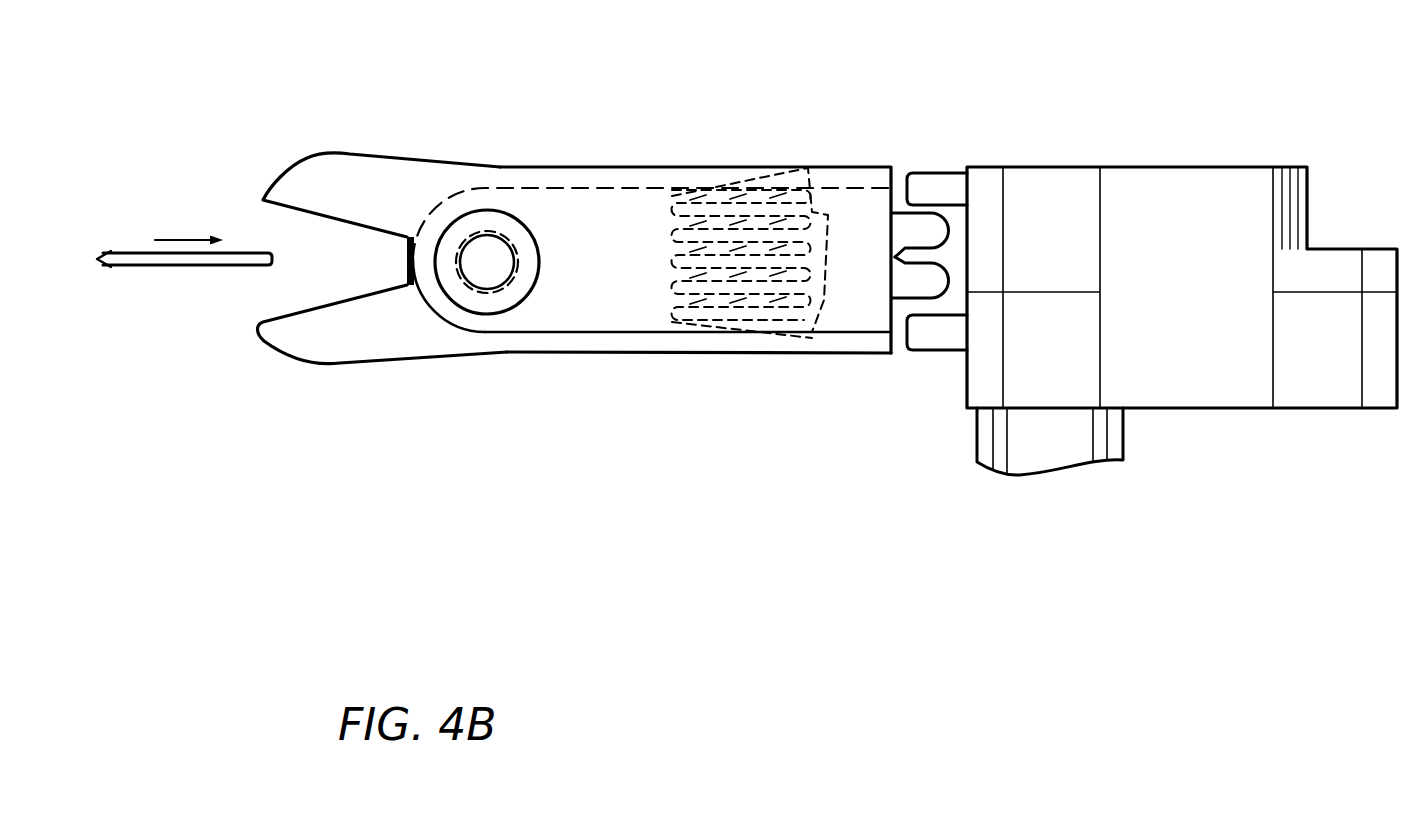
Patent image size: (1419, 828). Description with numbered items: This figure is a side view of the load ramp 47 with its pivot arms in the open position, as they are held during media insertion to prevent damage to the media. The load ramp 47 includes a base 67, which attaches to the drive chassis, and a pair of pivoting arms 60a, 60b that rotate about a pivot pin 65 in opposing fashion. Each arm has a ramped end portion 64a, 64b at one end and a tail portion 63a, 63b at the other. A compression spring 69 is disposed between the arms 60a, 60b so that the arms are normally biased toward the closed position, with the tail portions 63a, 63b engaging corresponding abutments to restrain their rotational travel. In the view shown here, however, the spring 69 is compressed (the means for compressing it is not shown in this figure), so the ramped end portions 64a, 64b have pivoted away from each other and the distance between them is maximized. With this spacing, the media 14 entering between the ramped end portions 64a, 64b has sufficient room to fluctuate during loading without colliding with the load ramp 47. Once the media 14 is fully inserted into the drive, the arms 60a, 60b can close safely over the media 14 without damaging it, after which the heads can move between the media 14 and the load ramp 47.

The media 14 is at (203, 266).
The load ramp 47 is at (881, 581).
The pivoting arm 60a is at (618, 167).
The pivoting arm 60b is at (480, 355).
The tail portion 63a is at (916, 282).
The tail portion 63b is at (916, 234).
The ramped end portion 64a is at (313, 169).
The ramped end portion 64b is at (313, 343).
The pivot pin 65 is at (513, 228).
The base 67 is at (1213, 178).
The compression spring 69 is at (773, 285).